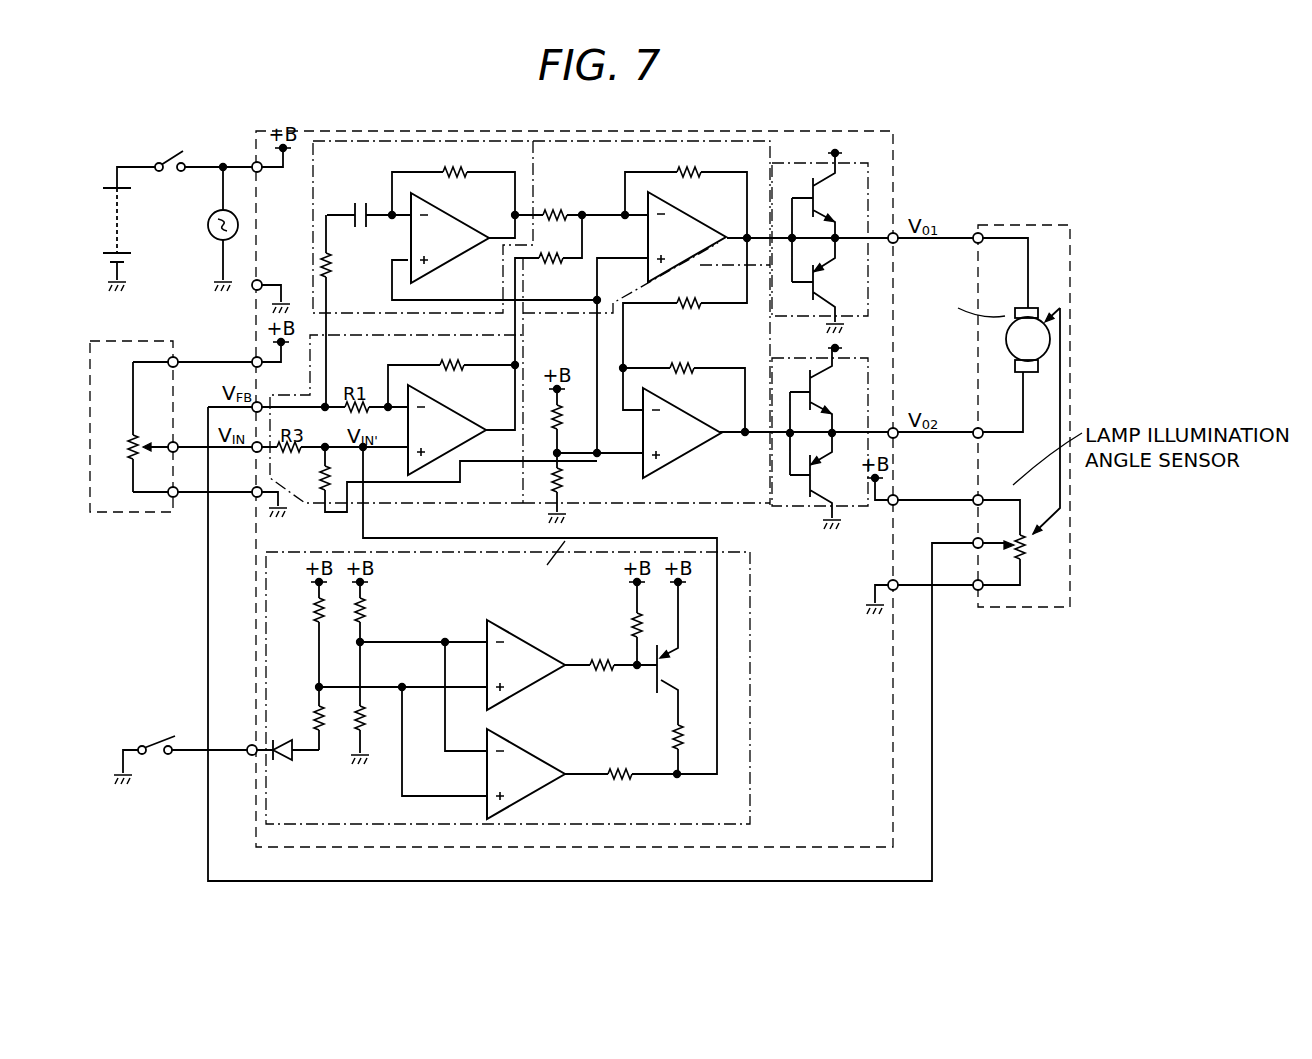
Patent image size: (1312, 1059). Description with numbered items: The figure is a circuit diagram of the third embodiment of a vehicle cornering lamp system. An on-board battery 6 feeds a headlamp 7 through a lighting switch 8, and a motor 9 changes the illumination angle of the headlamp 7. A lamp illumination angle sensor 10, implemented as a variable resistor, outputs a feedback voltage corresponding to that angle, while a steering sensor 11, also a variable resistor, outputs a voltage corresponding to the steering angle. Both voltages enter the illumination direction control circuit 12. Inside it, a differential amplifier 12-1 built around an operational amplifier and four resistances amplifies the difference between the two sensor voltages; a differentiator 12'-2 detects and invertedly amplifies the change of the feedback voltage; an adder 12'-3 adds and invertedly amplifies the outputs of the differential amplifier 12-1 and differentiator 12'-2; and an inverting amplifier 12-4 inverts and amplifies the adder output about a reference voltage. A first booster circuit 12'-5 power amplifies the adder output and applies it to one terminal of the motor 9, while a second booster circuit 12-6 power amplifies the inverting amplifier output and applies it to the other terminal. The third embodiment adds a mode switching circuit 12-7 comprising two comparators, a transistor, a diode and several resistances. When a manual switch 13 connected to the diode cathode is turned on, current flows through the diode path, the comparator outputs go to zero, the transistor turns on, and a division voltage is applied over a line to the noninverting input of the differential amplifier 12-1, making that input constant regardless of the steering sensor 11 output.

The on-board battery 6 is at (110, 233).
The headlamp 7 is at (208, 233).
The lighting switch 8 is at (169, 156).
The motor 9 is at (1052, 338).
The lamp illumination angle sensor 10 is at (1030, 546).
The steering sensor 11 is at (123, 513).
The illumination direction control circuit 12 is at (737, 489).
The manual switch 13 is at (156, 744).
The differential amplifier 12-1 is at (500, 494).
The inverting amplifier 12-4 is at (736, 496).
The second booster circuit 12-6 is at (866, 514).
The mode switching circuit 12-7 is at (590, 824).
The differentiator 12'-2 is at (480, 255).
The adder 12'-3 is at (775, 304).
The first booster circuit 12'-5 is at (839, 220).